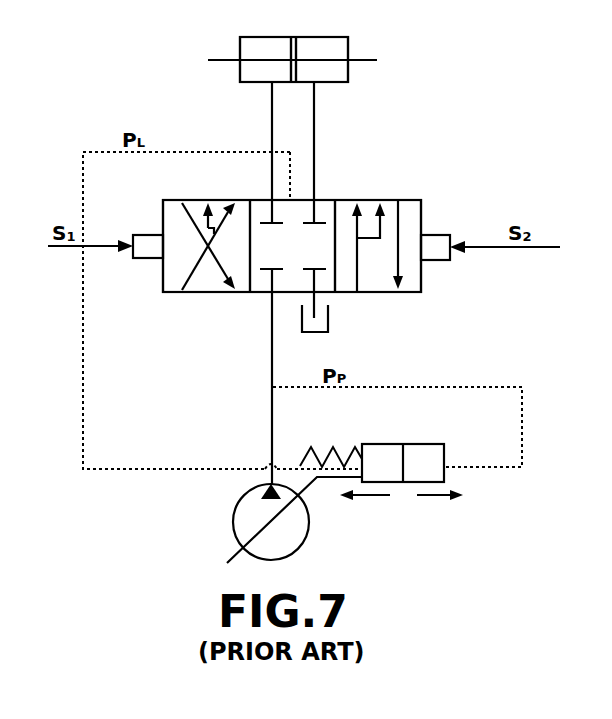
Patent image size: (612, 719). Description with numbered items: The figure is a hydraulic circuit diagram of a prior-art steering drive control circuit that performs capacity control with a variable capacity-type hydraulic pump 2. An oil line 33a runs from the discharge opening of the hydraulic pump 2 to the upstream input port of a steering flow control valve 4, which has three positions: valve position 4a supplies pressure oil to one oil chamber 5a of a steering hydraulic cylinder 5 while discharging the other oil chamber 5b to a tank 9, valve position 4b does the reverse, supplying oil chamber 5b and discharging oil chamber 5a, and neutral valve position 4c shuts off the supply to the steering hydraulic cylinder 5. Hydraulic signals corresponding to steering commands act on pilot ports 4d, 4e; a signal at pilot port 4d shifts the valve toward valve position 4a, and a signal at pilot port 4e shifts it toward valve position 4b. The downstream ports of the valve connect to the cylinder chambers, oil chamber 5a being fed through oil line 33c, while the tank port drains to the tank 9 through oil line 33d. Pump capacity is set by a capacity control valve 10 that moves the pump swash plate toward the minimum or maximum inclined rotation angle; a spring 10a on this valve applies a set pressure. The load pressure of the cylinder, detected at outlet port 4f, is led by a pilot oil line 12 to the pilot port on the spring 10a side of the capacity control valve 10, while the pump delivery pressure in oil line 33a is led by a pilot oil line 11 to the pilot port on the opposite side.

The variable capacity-type hydraulic pump 2 is at (307, 530).
The steering flow control valve 4 is at (317, 251).
The valve position 4a is at (192, 293).
The valve position 4b is at (420, 293).
The neutral valve position 4c is at (260, 293).
The pilot port 4d is at (143, 259).
The pilot port 4e is at (437, 261).
The outlet port 4f is at (293, 200).
The steering hydraulic cylinder 5 is at (296, 58).
The oil chamber 5a is at (348, 75).
The oil chamber 5b is at (240, 78).
The tank 9 is at (322, 333).
The capacity control valve 10 is at (444, 474).
The spring 10a is at (325, 446).
The pilot oil line 11 is at (497, 387).
The pilot oil line 12 is at (83, 385).
The oil line 33a is at (271, 368).
The oil line 33c is at (314, 120).
The oil line 33d is at (272, 120).